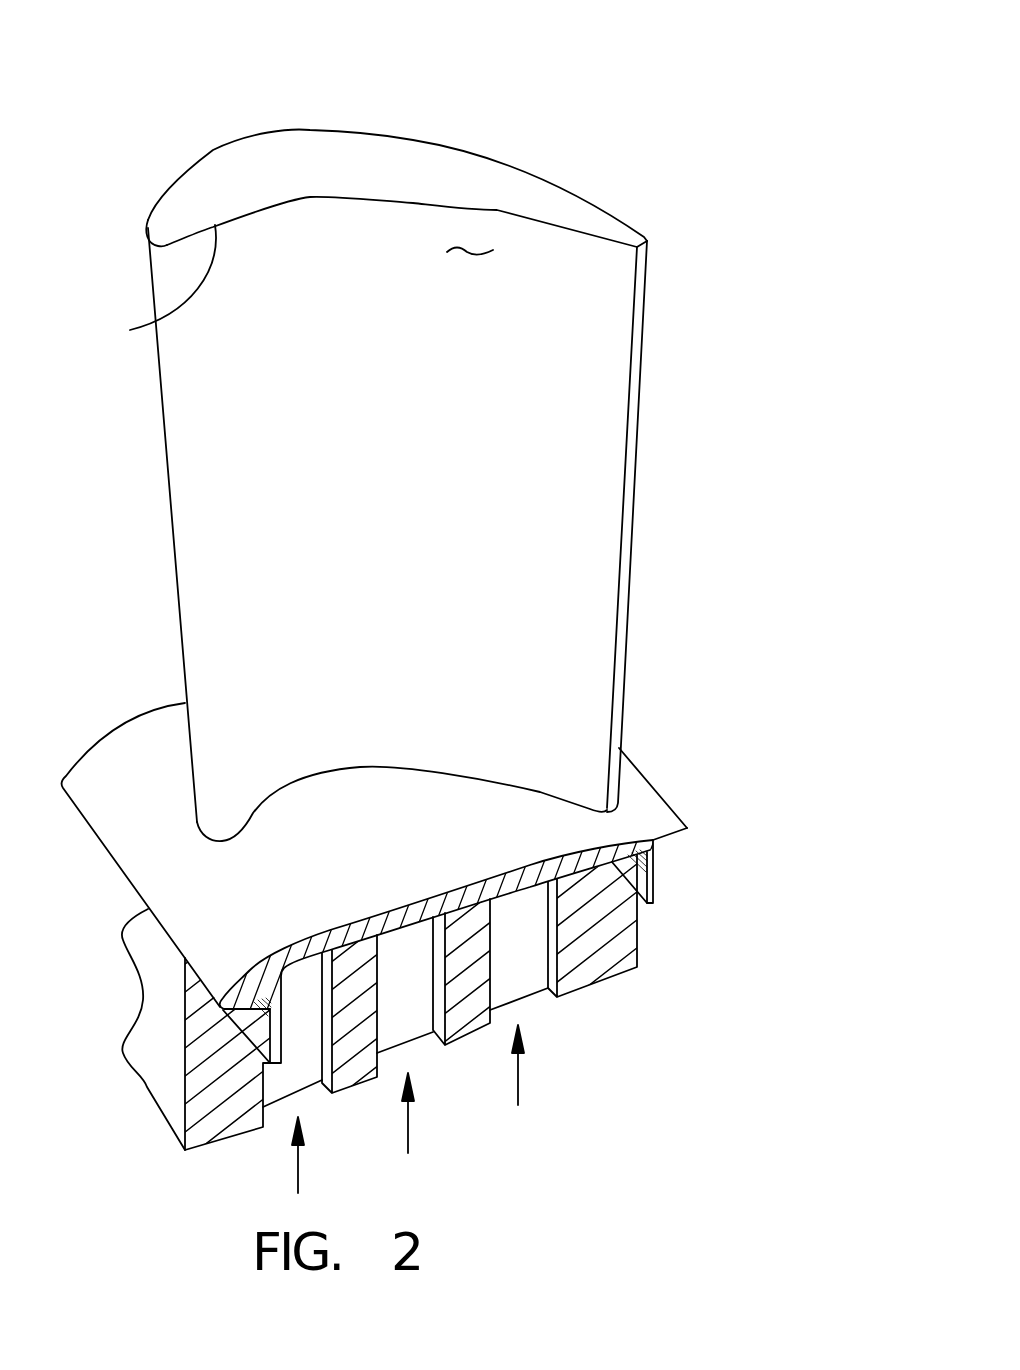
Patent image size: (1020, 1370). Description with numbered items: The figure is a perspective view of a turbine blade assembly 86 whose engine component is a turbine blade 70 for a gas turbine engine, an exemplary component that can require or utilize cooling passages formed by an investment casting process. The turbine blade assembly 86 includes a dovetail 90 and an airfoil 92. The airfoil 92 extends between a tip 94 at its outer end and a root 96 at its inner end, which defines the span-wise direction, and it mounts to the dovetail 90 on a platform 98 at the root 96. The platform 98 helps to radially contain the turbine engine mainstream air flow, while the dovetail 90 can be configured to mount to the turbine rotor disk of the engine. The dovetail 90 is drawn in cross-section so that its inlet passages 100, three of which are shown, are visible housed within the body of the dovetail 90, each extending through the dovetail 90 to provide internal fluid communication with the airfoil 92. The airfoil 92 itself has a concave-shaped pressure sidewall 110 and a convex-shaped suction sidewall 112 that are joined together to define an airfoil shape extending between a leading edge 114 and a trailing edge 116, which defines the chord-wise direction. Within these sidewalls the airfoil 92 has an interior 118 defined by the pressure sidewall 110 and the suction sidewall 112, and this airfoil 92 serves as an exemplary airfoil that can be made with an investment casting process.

The turbine blade 70 is at (555, 468).
The turbine blade assembly 86 is at (672, 90).
The dovetail 90 is at (162, 1018).
The airfoil 92 is at (298, 125).
The tip 94 is at (250, 173).
The root 96 is at (567, 798).
The platform 98 is at (110, 748).
The inlet passage 100 is at (298, 1173).
The pressure sidewall 110 is at (163, 317).
The suction sidewall 112 is at (413, 140).
The leading edge 114 is at (157, 247).
The trailing edge 116 is at (647, 290).
The interior 118 is at (470, 245).